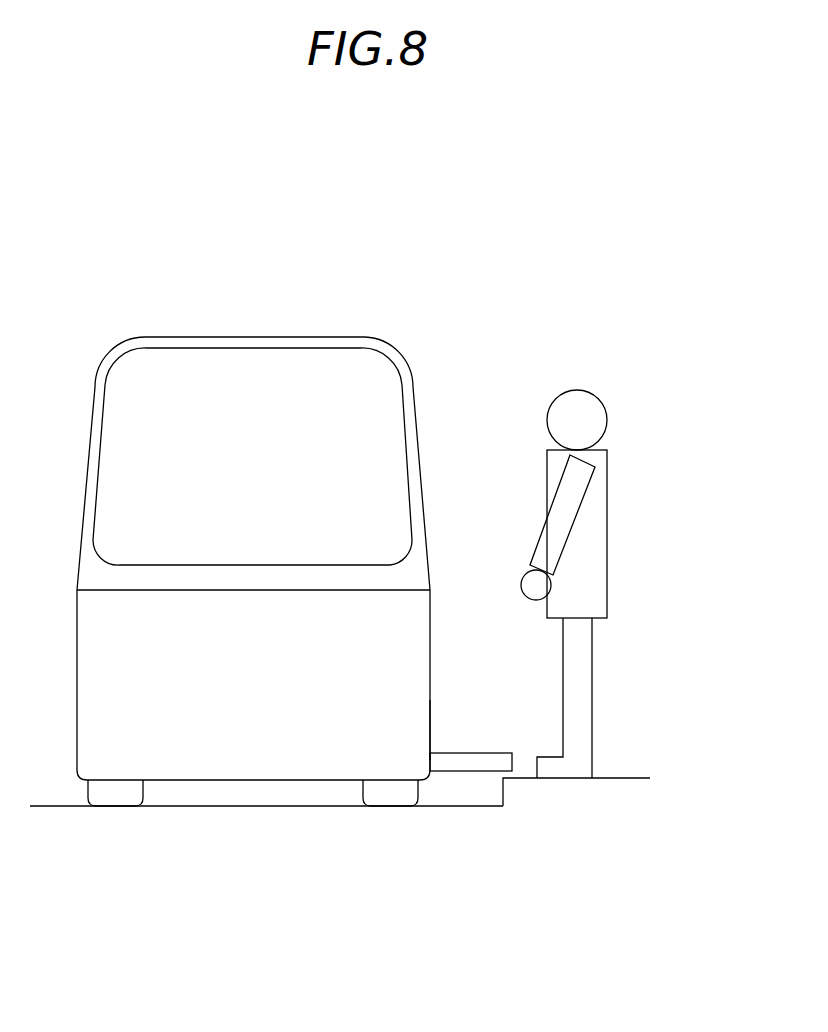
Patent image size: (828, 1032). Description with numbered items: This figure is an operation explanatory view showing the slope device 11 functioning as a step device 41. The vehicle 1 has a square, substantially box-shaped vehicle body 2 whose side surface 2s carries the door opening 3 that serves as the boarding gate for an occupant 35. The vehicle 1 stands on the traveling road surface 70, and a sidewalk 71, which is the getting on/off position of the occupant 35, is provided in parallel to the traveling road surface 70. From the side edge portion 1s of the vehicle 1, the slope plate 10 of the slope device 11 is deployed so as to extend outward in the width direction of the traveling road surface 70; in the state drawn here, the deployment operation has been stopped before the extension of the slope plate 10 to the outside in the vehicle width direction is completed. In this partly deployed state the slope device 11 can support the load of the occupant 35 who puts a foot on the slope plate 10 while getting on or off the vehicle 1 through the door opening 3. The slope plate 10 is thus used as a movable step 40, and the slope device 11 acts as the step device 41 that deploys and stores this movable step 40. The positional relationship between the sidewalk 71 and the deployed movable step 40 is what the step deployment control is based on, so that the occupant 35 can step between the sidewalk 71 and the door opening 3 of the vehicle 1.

The vehicle 1 is at (83, 323).
The vehicle body 2 is at (254, 337).
The side surface 2s is at (430, 770).
The door opening 3 is at (430, 637).
The side edge portion 1s is at (430, 753).
The occupant 35 is at (527, 388).
The movable step 40 is at (462, 771).
The slope plate 10 is at (462, 771).
The step device 41 is at (460, 743).
The slope device 11 is at (462, 771).
The traveling road surface 70 is at (196, 806).
The sidewalk 71 is at (605, 775).